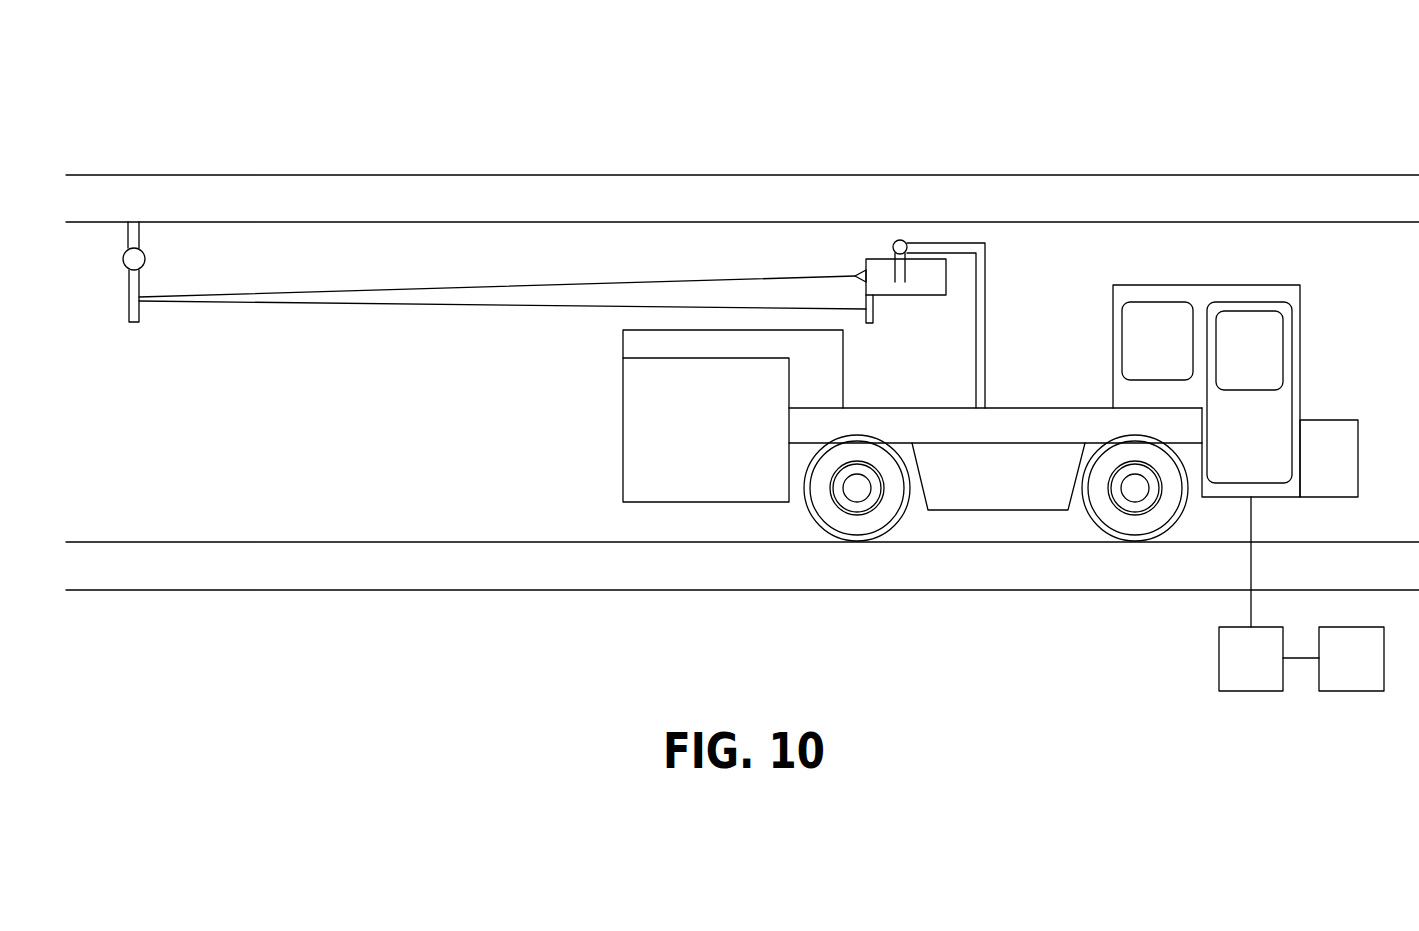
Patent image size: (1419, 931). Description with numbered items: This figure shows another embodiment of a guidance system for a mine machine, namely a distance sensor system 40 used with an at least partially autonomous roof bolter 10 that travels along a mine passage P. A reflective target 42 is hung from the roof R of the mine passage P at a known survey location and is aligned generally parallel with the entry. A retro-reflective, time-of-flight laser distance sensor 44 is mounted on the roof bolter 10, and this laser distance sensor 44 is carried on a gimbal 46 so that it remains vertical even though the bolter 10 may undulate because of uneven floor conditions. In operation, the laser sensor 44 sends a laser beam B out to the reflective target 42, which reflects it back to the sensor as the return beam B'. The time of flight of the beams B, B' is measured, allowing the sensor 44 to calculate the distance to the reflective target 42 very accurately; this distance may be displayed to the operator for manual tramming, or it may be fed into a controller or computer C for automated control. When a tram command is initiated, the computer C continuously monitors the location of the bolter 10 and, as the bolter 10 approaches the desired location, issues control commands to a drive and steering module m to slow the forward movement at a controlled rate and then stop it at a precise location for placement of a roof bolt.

The roof bolter 10 is at (1003, 488).
The distance sensor system 40 is at (1118, 153).
The reflective target 42 is at (137, 323).
The laser distance sensor 44 is at (866, 259).
The gimbal 46 is at (900, 240).
The roof R is at (350, 221).
The laser beam B is at (497, 262).
The reflected beam B' is at (502, 341).
The mine passage P is at (303, 395).
The controller or computer C is at (1251, 659).
The drive and steering module m is at (1351, 659).